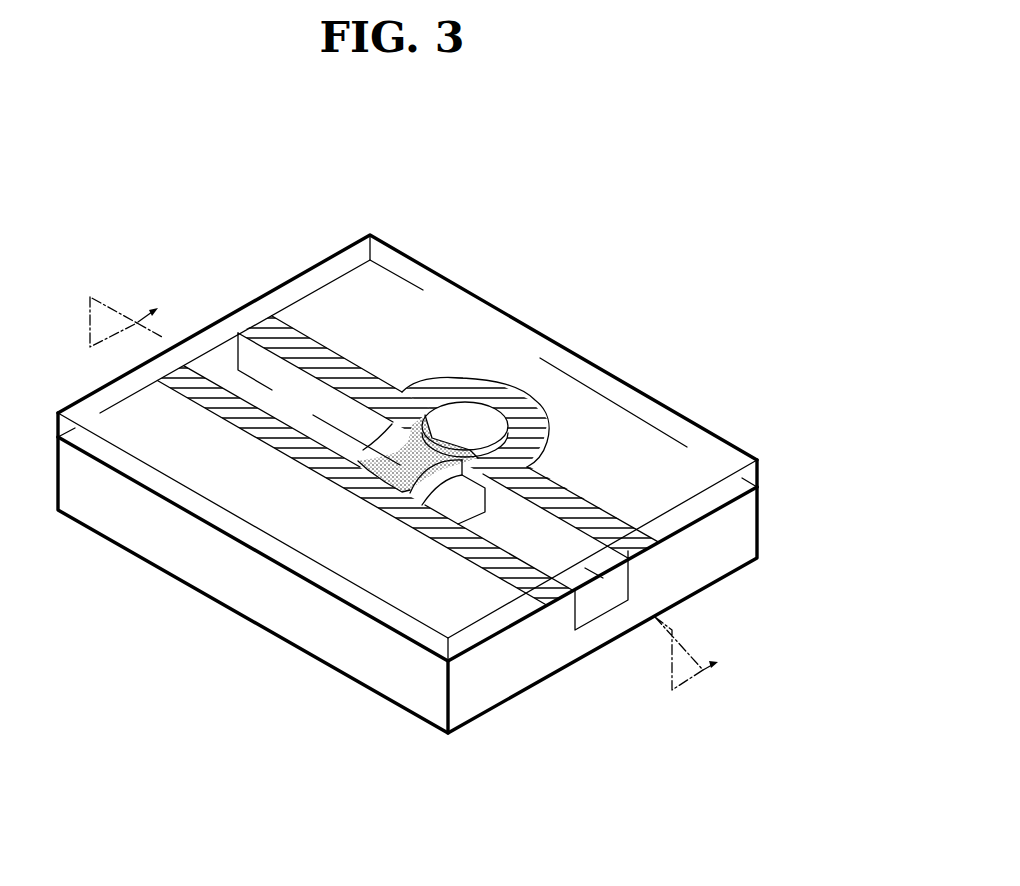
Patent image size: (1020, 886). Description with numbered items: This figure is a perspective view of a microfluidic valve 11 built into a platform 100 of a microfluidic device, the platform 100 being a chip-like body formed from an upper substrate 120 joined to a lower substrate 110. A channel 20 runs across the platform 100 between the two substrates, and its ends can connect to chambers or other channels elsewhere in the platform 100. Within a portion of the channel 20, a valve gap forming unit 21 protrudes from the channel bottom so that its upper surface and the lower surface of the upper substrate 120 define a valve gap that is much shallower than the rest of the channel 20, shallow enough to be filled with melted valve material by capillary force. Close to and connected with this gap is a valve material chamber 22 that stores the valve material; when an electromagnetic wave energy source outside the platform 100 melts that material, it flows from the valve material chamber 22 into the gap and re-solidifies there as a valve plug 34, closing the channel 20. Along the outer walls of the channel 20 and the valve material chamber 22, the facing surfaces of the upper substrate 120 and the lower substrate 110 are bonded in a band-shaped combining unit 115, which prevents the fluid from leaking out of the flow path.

The microfluidic valve 11 is at (737, 340).
The channel 20 is at (590, 603).
The valve gap forming unit 21 is at (465, 490).
The valve material chamber 22 is at (473, 430).
The valve plug 34 is at (423, 440).
The platform 100 is at (845, 463).
The lower substrate 110 is at (753, 528).
The combining unit 115 is at (210, 397).
The upper substrate 120 is at (742, 478).